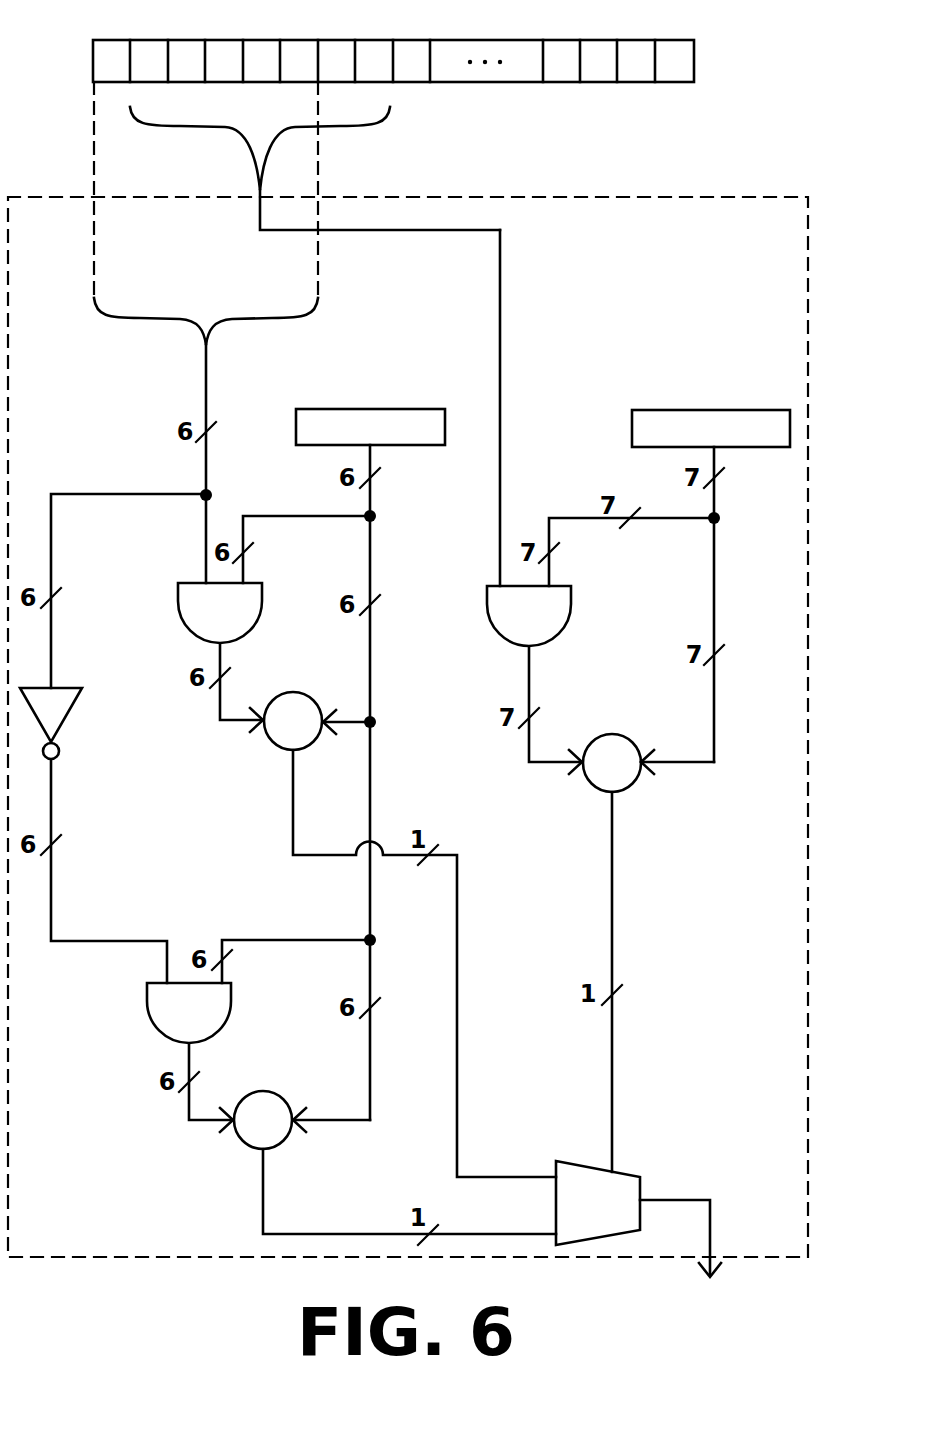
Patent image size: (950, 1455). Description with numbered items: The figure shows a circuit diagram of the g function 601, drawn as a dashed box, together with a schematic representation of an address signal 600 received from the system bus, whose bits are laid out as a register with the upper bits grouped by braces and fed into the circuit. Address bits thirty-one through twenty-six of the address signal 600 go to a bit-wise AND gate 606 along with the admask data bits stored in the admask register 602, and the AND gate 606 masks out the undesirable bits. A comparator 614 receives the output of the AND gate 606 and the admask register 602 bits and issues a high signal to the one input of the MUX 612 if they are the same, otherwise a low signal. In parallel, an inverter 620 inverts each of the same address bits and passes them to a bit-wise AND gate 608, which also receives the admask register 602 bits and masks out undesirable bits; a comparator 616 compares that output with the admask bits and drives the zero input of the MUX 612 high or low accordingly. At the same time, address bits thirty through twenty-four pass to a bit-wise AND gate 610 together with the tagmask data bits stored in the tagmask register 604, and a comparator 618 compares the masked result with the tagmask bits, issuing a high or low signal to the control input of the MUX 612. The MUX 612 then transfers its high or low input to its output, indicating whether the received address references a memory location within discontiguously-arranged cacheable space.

The address signal 600 is at (78, 55).
The g function 601 is at (694, 197).
The admask register 602 is at (297, 385).
The tagmask register 604 is at (640, 388).
The bit-wise AND gate 606 is at (220, 657).
The bit-wise AND gate 608 is at (190, 1057).
The bit-wise AND gate 610 is at (534, 680).
The MUX 612 is at (671, 1236).
The comparator 614 is at (318, 677).
The comparator 616 is at (289, 1076).
The comparator 618 is at (635, 719).
The inverter 620 is at (78, 716).